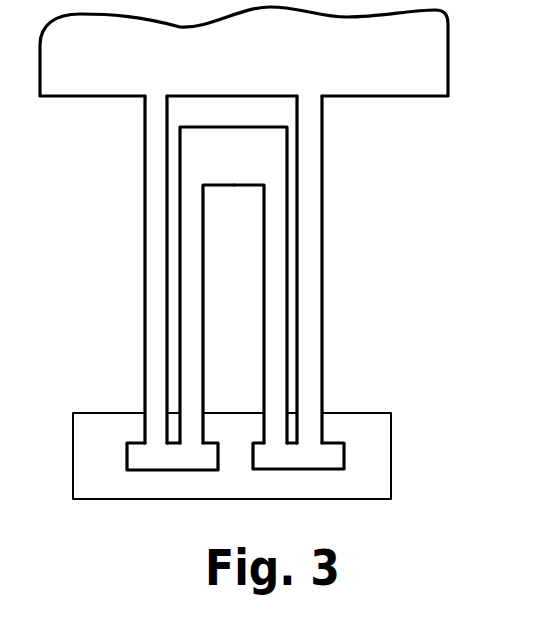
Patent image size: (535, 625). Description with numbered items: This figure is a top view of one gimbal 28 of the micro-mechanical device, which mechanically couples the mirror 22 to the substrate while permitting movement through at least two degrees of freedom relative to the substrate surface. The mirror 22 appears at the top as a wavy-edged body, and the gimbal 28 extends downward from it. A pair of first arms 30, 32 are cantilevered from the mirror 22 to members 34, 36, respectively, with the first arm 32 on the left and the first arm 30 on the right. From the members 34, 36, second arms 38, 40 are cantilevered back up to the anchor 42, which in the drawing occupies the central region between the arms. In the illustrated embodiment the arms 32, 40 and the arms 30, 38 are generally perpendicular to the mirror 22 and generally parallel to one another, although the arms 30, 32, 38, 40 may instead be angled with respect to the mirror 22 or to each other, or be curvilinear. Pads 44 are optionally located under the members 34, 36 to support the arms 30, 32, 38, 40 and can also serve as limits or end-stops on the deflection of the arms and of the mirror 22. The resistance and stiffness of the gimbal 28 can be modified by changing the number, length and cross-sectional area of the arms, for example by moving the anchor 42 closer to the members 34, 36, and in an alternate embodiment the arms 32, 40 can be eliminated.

The mirror 22 is at (343, 66).
The gimbal 28 is at (362, 270).
The first arm 30 is at (310, 188).
The first arm 32 is at (157, 245).
The member 34 is at (328, 452).
The member 36 is at (143, 457).
The second arm 38 is at (273, 332).
The second arm 40 is at (190, 345).
The anchor 42 is at (213, 153).
The pad 44 is at (363, 480).